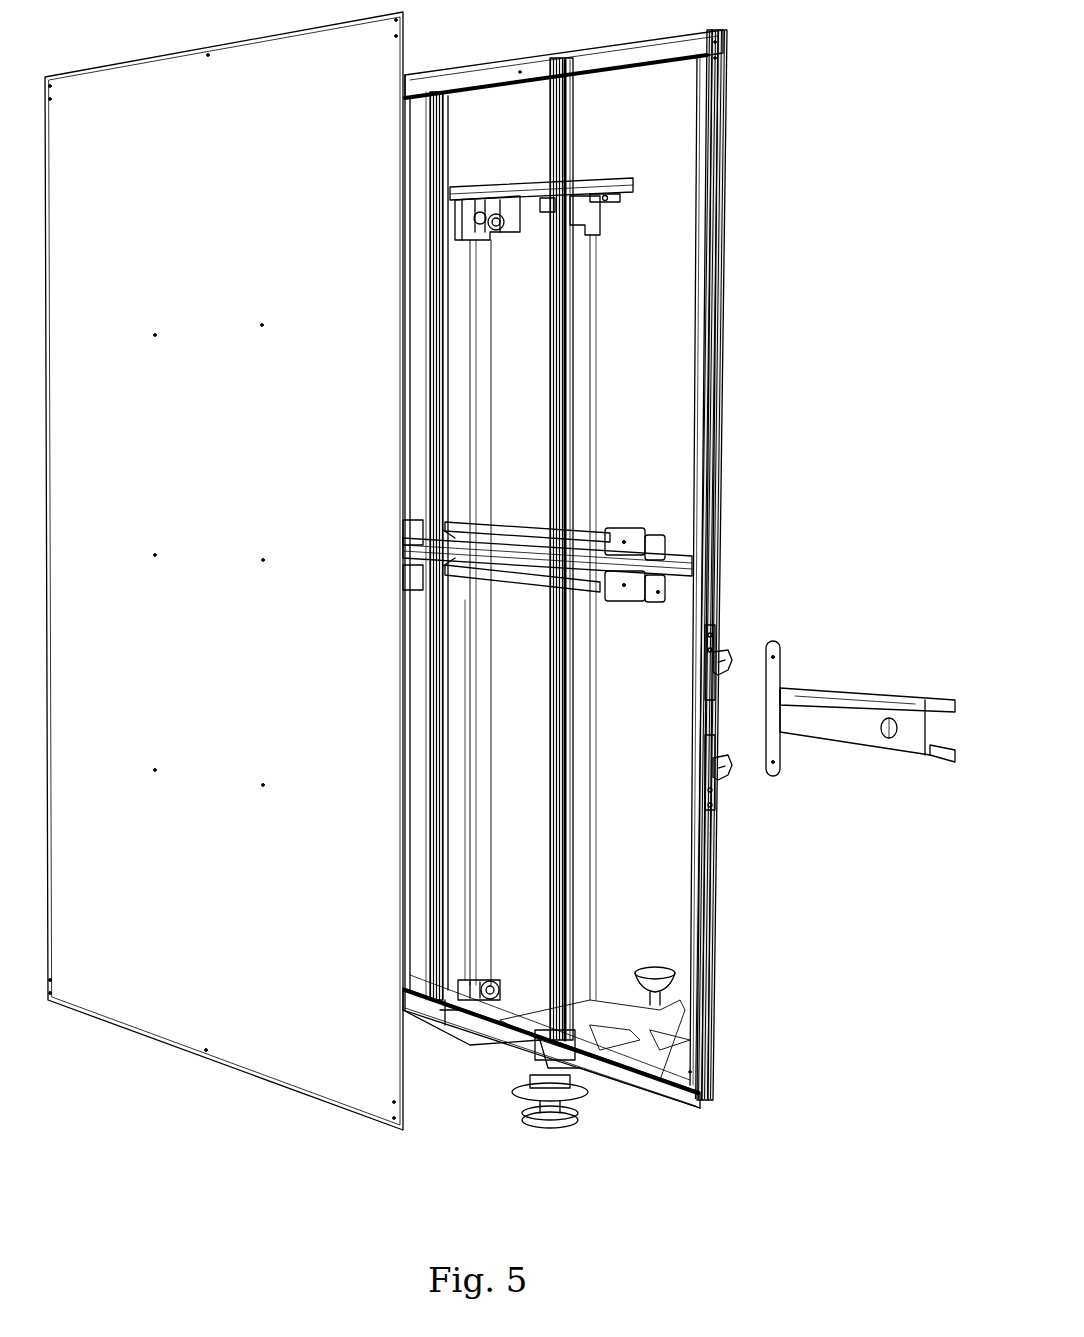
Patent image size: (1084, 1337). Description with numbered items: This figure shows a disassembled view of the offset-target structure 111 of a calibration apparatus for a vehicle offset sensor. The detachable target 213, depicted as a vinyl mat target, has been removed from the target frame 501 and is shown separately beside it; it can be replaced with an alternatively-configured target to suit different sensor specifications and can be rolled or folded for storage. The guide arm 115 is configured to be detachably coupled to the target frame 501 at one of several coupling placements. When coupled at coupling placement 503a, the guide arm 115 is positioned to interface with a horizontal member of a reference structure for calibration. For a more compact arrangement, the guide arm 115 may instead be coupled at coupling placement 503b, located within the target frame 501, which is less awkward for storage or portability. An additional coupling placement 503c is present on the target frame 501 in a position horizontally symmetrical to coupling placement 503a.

The offset-target structure 111 is at (846, 83).
The detachable target 213 is at (280, 212).
The target frame 501 is at (722, 358).
The coupling placement 503a is at (758, 626).
The coupling placement 503b is at (520, 222).
The coupling placement 503c is at (415, 692).
The guide arm 115 is at (915, 700).